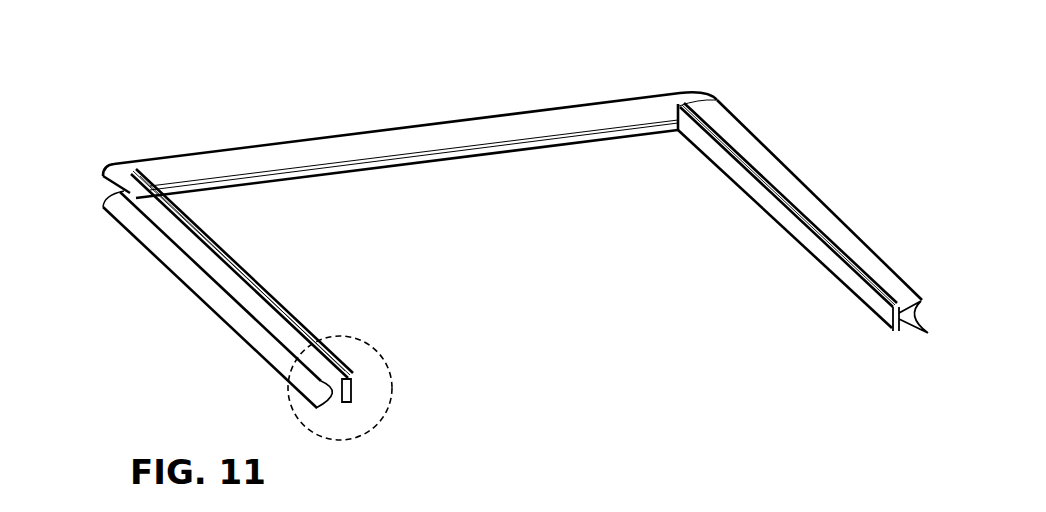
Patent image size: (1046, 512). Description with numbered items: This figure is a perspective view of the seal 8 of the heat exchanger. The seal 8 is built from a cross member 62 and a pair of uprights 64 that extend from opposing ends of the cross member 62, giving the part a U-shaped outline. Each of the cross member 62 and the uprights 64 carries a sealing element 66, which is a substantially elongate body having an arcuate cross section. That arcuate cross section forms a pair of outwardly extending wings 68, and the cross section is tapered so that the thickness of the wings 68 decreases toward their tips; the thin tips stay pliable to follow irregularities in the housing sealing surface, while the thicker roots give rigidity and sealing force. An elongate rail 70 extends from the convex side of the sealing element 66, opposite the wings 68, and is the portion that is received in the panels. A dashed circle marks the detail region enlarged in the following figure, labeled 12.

The seal 8 is at (216, 84).
The cross member 62 is at (713, 68).
The uprights 64 is at (277, 427).
The sealing element 66 is at (196, 296).
The wings 68 is at (226, 335).
The rail 70 is at (272, 299).
The detail region (FIG. 12) 12 is at (392, 377).